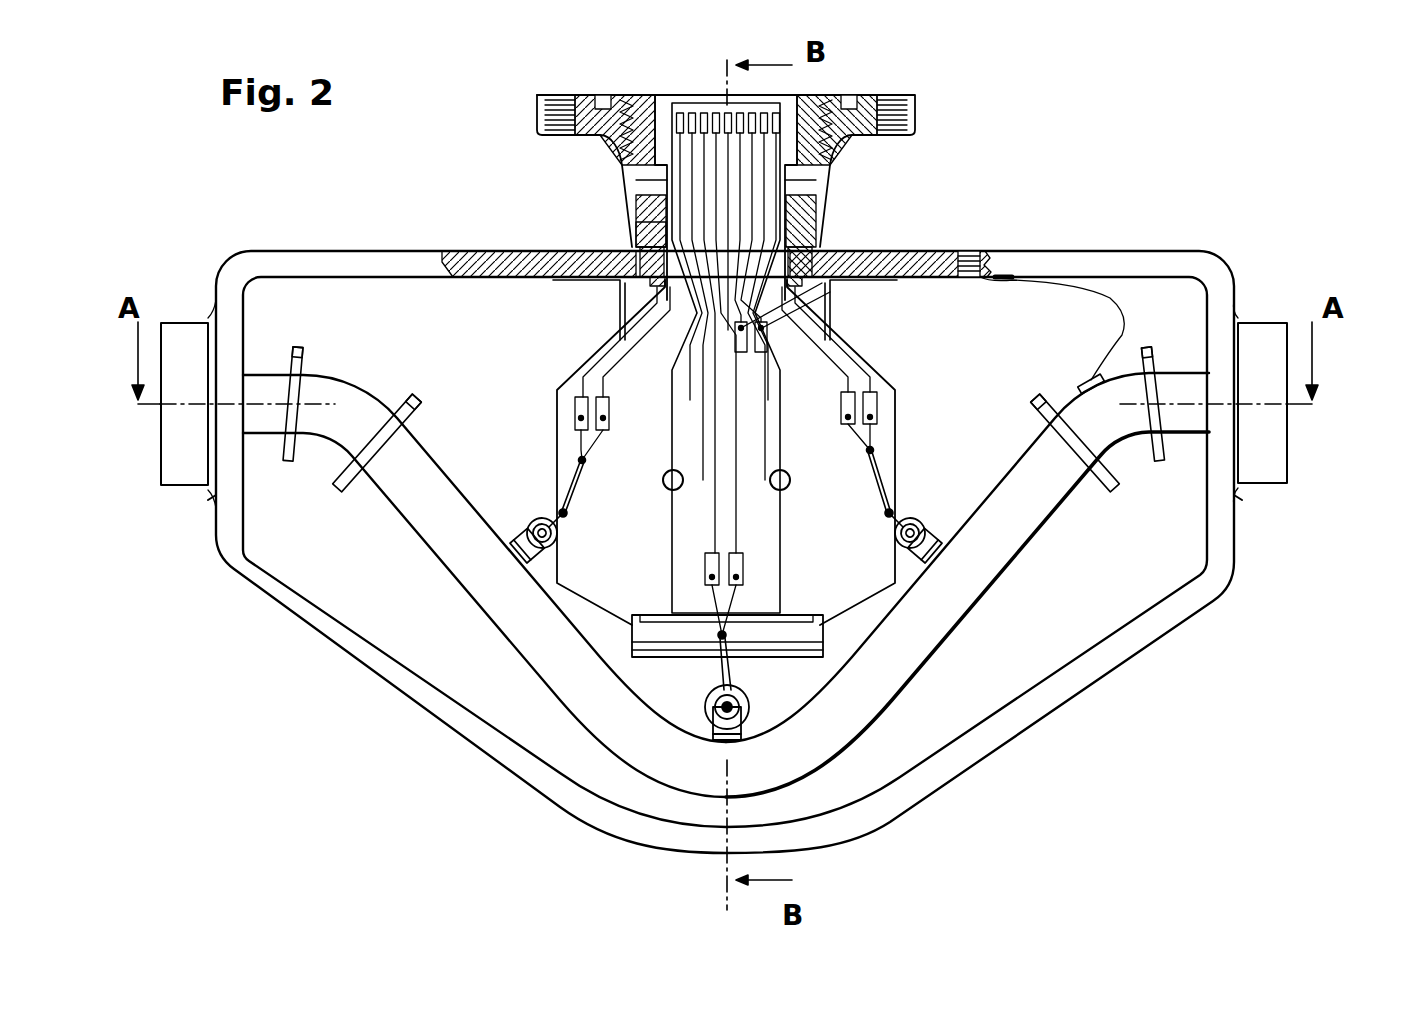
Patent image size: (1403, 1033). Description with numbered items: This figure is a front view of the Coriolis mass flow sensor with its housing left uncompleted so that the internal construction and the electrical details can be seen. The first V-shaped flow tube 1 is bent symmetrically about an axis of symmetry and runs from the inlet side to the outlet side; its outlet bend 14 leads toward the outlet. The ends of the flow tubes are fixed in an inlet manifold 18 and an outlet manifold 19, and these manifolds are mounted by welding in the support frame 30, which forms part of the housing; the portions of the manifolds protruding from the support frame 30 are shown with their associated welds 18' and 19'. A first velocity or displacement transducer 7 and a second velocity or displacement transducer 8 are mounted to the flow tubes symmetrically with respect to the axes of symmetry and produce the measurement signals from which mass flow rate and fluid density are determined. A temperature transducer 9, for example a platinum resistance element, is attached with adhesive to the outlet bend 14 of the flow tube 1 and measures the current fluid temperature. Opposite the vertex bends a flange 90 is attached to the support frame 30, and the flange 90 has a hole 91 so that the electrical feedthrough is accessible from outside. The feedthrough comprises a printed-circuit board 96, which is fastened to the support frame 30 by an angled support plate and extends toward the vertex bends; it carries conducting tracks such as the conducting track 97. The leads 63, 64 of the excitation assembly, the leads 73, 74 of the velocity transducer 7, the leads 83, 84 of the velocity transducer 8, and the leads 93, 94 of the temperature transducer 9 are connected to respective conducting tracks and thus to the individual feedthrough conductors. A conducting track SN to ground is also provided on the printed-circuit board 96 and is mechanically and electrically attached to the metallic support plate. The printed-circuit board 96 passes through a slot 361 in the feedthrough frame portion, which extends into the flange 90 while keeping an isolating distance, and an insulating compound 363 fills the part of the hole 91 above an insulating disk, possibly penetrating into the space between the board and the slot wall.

The first V-shaped flow tube 1 is at (415, 527).
The first velocity or displacement transducer 7 is at (512, 562).
The second velocity or displacement transducer 8 is at (950, 565).
The temperature transducer 9 is at (1085, 385).
The outlet bend 14 is at (1135, 455).
The inlet manifold 18 is at (188, 348).
The weld 18' is at (193, 539).
The outlet manifold 19 is at (1266, 357).
The weld 19' is at (1270, 546).
The support frame 30 is at (1142, 252).
The lead of excitation assembly 63 is at (715, 605).
The lead of excitation assembly 64 is at (730, 605).
The lead of velocity transducer 7 73 is at (573, 480).
The lead of velocity transducer 7 74 is at (580, 508).
The lead of velocity transducer 8 83 is at (858, 450).
The lead of velocity transducer 8 84 is at (882, 455).
The flange 90 is at (832, 162).
The hole 91 is at (662, 125).
The lead of temperature transducer 93 is at (828, 328).
The lead of temperature transducer 94 is at (835, 330).
The printed-circuit board 96 is at (567, 408).
The conducting track 97 is at (860, 365).
The slot 361 is at (648, 300).
The insulating compound 363 is at (634, 232).
The conducting track to ground SN is at (786, 520).